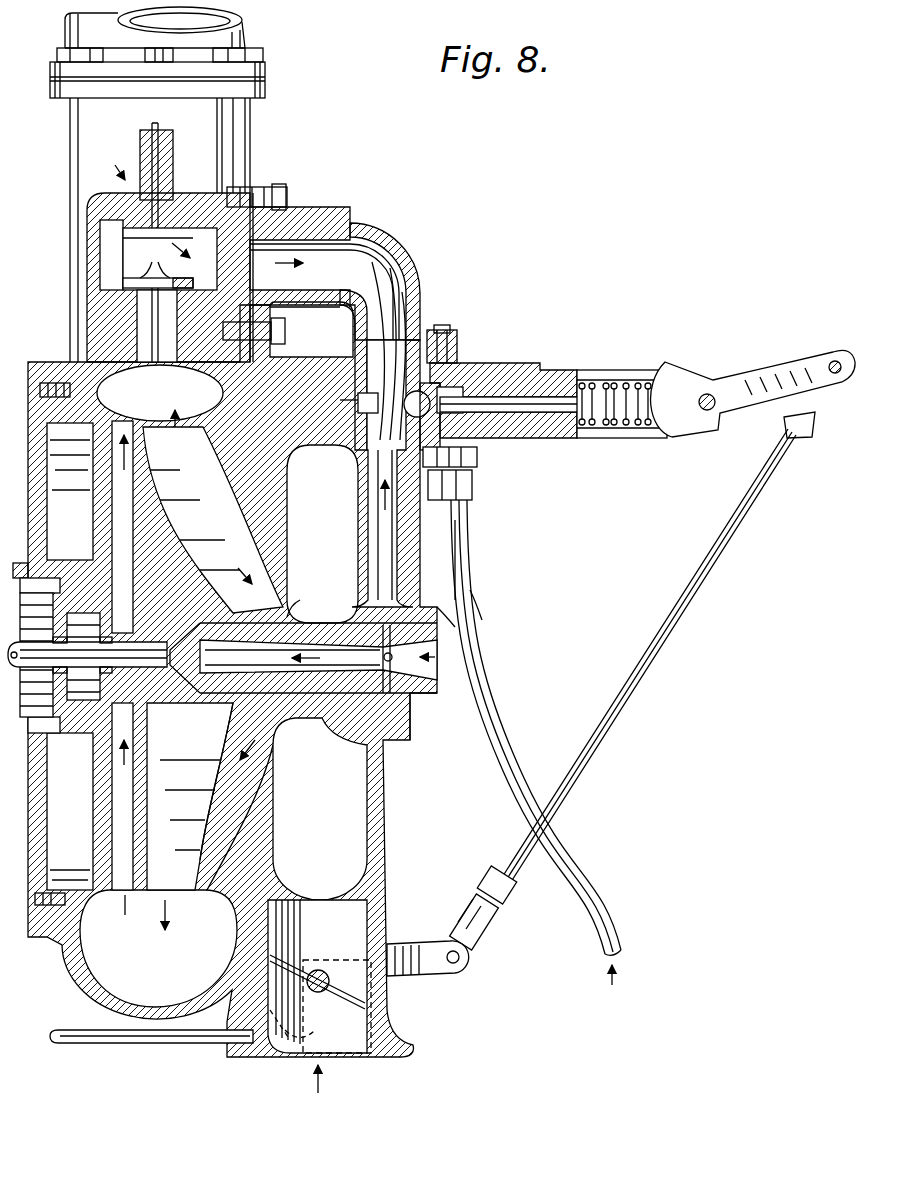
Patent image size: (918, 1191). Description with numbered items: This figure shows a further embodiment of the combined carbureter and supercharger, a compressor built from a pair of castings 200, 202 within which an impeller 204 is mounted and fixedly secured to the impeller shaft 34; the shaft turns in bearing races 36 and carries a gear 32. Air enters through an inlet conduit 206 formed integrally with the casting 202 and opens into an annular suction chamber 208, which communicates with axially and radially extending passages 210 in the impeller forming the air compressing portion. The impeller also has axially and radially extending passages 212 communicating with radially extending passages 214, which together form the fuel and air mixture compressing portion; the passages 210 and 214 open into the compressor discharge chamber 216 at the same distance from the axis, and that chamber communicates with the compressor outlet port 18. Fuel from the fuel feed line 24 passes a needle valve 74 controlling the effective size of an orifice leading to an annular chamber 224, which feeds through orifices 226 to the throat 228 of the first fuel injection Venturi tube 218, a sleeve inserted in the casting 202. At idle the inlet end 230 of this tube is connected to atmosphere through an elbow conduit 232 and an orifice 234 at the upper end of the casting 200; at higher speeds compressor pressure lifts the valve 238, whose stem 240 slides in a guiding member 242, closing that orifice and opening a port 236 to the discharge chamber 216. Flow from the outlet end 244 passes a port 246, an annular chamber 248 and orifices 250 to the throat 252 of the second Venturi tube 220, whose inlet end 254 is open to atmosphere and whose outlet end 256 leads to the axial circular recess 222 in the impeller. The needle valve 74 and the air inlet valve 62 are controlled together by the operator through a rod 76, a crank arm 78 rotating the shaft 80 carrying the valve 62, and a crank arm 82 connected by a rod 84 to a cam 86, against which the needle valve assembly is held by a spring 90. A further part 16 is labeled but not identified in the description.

The cap 16 is at (247, 32).
The compressor outlet port 18 is at (250, 136).
The fuel feed line 24 is at (458, 568).
The gear 32 is at (22, 592).
The impeller shaft 34 is at (87, 655).
The bearing races 36 is at (83, 656).
The valve 62 is at (335, 1058).
The needle valve 74 is at (520, 400).
The rod 76 is at (140, 1045).
The crank arm 78 is at (300, 1058).
The shaft 80 is at (320, 970).
The crank arm 82 is at (428, 975).
The rod 84 is at (590, 756).
The cam 86 is at (680, 385).
The spring 90 is at (632, 385).
The casting 200 is at (82, 770).
The casting 202 is at (385, 800).
The impeller 204 is at (215, 830).
The inlet conduit 206 is at (358, 910).
The annular suction chamber 208 is at (322, 462).
The passages 210 is at (240, 545).
The passages 212 is at (272, 578).
The radially extending passages 214 is at (135, 512).
The compressor discharge chamber 216 is at (100, 388).
The fuel injection Venturi tube 218 is at (465, 500).
The Venturi tube 220 is at (440, 636).
The axial circular recess 222 is at (432, 340).
The annular chamber 224 is at (440, 328).
The orifices 226 is at (402, 330).
The throat 228 is at (392, 290).
The inlet end 230 is at (380, 270).
The elbow conduit 232 is at (345, 225).
The orifice 234 is at (128, 206).
The port 236 is at (142, 302).
The valve 238 is at (178, 282).
The stem 240 is at (158, 162).
The guiding member 242 is at (140, 150).
The outlet end 244 is at (460, 542).
The port 246 is at (445, 600).
The annular chamber 248 is at (438, 616).
The orifices 250 is at (430, 680).
The throat 252 is at (442, 656).
The inlet end 254 is at (447, 693).
The outlet end 256 is at (290, 622).